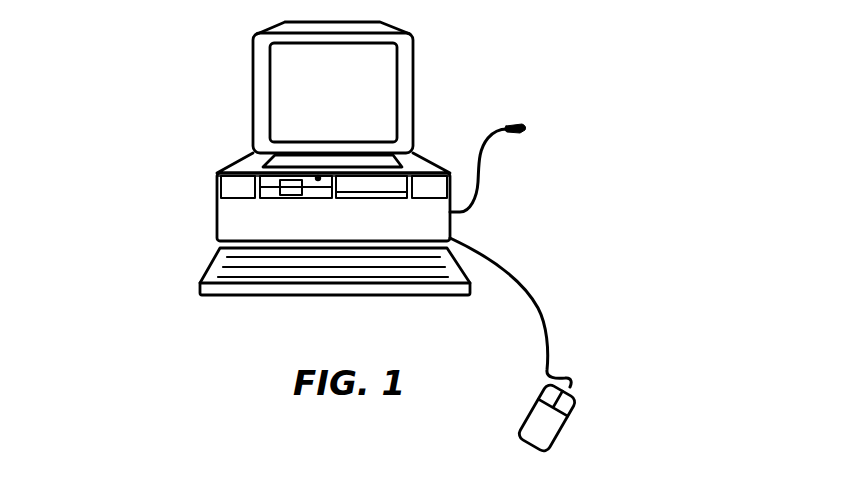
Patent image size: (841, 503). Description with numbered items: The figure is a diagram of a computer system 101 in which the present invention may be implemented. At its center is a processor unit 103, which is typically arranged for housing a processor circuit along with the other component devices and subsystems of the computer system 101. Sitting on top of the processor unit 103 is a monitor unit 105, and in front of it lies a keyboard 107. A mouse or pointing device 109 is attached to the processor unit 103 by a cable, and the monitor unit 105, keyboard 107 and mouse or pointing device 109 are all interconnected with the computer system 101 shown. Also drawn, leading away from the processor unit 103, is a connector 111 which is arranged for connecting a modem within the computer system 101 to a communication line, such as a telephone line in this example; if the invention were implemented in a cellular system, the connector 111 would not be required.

The computer system 101 is at (620, 213).
The processor unit 103 is at (233, 212).
The monitor unit 105 is at (252, 115).
The keyboard 107 is at (200, 285).
The mouse or pointing device 109 is at (576, 432).
The connector 111 is at (513, 120).